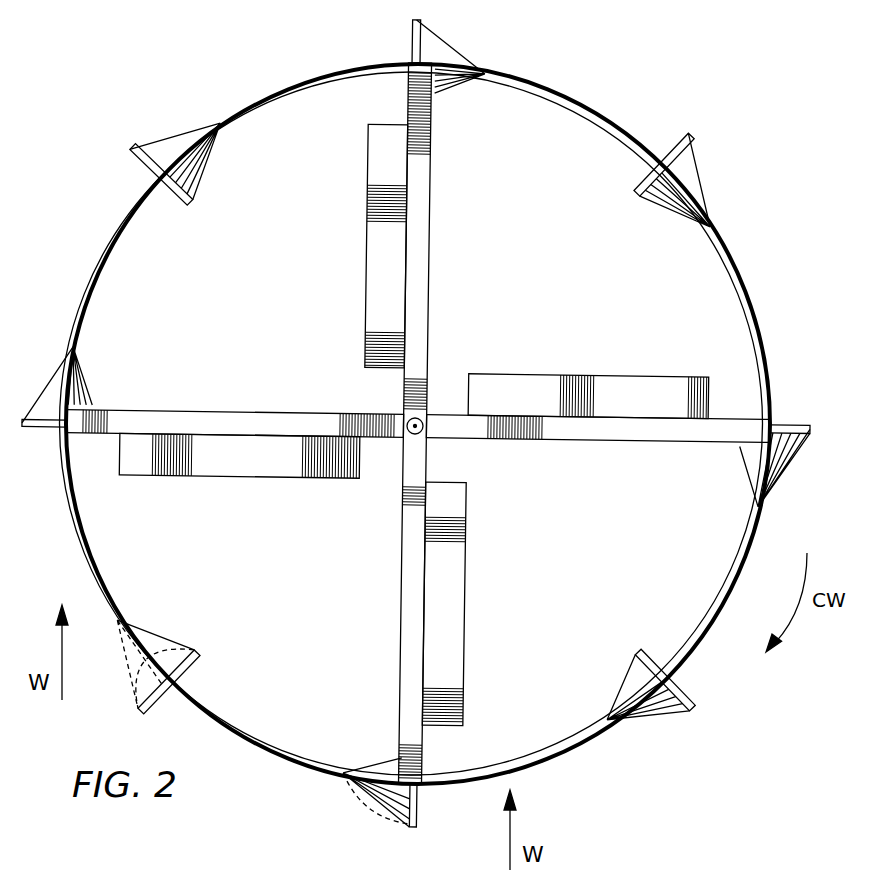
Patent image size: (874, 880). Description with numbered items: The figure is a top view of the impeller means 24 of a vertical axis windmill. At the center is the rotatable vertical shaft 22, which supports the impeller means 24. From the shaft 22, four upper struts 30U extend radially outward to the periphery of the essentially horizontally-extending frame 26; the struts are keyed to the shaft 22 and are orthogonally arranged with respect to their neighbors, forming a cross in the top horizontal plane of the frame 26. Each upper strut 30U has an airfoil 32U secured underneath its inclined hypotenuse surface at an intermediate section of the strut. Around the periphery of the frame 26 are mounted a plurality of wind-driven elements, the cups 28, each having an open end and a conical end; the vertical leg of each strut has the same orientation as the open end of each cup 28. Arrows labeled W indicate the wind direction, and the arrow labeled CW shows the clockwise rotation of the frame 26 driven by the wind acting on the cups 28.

The rotatable vertical shaft 22 is at (403, 420).
The impeller means 24 is at (754, 236).
The frame 26 is at (770, 346).
The cups 28 is at (182, 140).
The upper struts 30U is at (432, 188).
The airfoils 32U is at (365, 162).